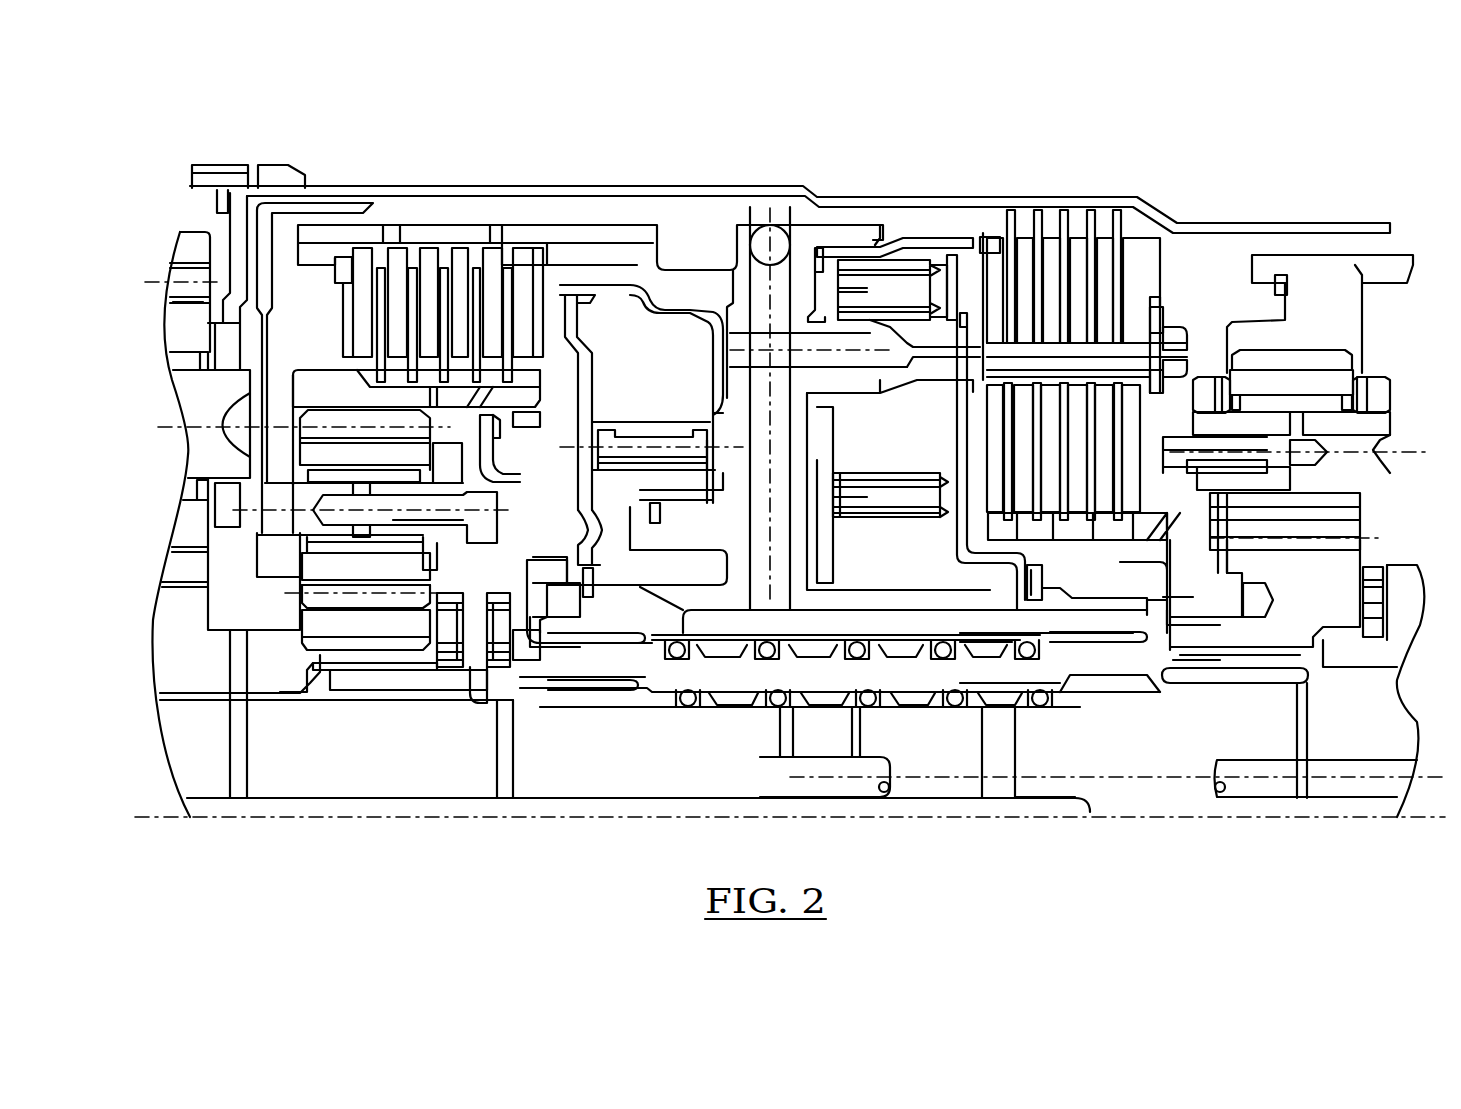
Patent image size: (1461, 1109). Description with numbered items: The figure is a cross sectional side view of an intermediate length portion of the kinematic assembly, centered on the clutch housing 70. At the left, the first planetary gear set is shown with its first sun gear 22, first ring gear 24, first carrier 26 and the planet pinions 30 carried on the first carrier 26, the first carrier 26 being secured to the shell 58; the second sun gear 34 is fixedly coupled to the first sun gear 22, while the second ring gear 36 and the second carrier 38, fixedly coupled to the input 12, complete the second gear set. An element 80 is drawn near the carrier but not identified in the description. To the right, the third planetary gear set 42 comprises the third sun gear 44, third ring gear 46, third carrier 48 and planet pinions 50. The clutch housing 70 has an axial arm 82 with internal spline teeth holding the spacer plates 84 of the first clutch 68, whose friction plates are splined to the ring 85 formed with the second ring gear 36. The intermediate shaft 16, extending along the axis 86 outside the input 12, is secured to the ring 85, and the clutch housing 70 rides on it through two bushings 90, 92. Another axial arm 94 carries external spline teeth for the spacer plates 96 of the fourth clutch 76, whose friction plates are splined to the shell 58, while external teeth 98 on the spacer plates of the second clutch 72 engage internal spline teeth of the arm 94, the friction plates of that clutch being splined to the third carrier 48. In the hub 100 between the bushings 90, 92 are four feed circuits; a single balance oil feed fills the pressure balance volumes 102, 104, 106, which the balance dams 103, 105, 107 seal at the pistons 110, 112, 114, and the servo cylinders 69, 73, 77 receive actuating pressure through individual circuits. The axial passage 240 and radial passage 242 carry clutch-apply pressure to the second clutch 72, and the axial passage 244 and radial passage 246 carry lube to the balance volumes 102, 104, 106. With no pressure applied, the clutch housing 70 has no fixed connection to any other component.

The input 12 is at (630, 757).
The intermediate shaft 16 is at (1215, 663).
The first sun gear 22 is at (190, 667).
The first ring gear 24 is at (190, 250).
The first carrier 26 is at (237, 233).
The planet pinions 30 is at (192, 510).
The second sun gear 34 is at (353, 627).
The second ring gear 36 is at (307, 385).
The second carrier 38 is at (270, 558).
The third planetary gear set 42 is at (1396, 378).
The third sun gear 44 is at (1343, 598).
The third ring gear 46 is at (1328, 315).
The third carrier 48 is at (1380, 395).
The planet pinions 50 is at (1333, 520).
The shell 58 is at (773, 192).
The first clutch 68 is at (332, 315).
The servo cylinder 69 is at (718, 300).
The clutch housing 70 is at (803, 547).
The second clutch 72 is at (955, 430).
The servo cylinder 73 is at (822, 470).
The fourth clutch 76 is at (1172, 278).
The servo cylinder 77 is at (820, 250).
The wall 80 is at (280, 242).
The axial arm 82 is at (582, 237).
The spacer plates 84 is at (462, 262).
The ring 85 is at (527, 397).
The axis 86 is at (1277, 820).
The bushing 90 is at (597, 620).
The bushing 92 is at (1160, 640).
The axial arm 94 is at (1180, 363).
The spacer plates 96 is at (1077, 247).
The external teeth 98 is at (990, 517).
The hub 100 is at (1073, 610).
The pressure balance volume 102 is at (668, 389).
The balance dam 103 is at (593, 350).
The pressure balance volume 104 is at (933, 690).
The balance dam 105 is at (990, 550).
The pressure balance volume 106 is at (920, 258).
The balance dam 107 is at (963, 287).
The piston 110 is at (678, 302).
The piston 112 is at (833, 565).
The piston 114 is at (860, 248).
The axial passage 240 is at (835, 787).
The radial passage 242 is at (813, 730).
The axial passage 244 is at (920, 813).
The radial passage 246 is at (1007, 720).